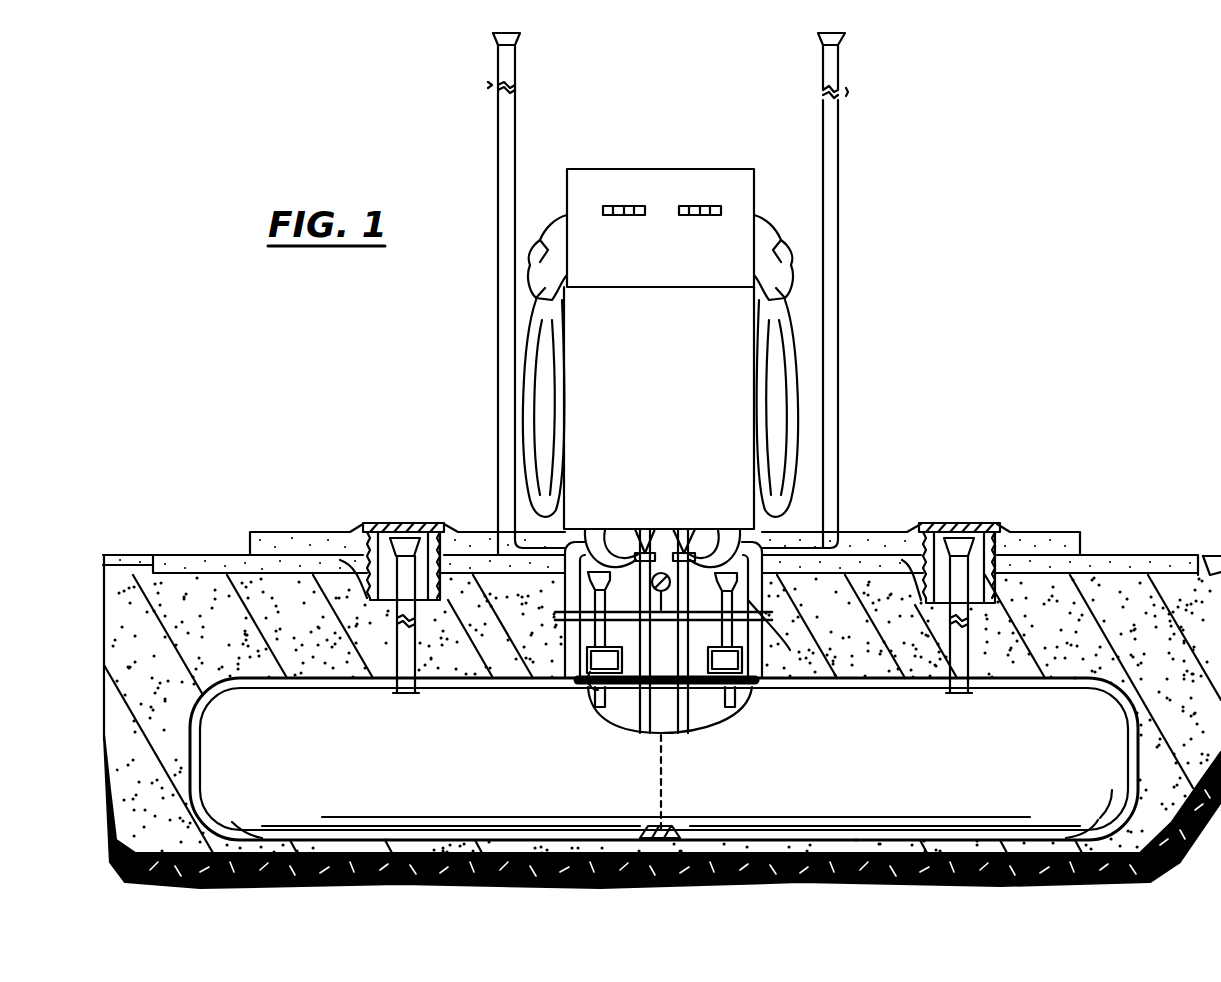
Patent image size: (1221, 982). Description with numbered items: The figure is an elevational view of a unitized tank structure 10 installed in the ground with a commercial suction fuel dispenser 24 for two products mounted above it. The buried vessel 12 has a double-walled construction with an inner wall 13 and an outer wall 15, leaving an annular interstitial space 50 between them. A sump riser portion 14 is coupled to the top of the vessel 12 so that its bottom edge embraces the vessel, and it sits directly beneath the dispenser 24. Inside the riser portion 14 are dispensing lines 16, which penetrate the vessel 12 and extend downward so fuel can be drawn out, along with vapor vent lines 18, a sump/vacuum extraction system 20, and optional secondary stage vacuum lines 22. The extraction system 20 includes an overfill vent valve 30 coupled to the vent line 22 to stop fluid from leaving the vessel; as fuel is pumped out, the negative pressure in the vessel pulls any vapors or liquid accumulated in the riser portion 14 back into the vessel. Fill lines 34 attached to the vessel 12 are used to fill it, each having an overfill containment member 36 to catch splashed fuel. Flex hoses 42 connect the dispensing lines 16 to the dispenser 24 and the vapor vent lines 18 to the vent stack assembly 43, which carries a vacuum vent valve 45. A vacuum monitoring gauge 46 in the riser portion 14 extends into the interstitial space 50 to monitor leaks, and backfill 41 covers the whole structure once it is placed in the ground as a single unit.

The unitized tank structure 10 is at (1135, 512).
The vessel 12 is at (262, 838).
The inner wall 13 is at (632, 725).
The sump riser portion 14 is at (790, 650).
The outer wall 15 is at (602, 716).
The dispensing lines 16 is at (620, 541).
The vapor vent lines 18 is at (580, 662).
The sump/vacuum extraction system 20 is at (572, 670).
The secondary stage vacuum lines 22 is at (576, 592).
The fuel dispenser 24 is at (645, 182).
The overfill vent valve 30 is at (724, 707).
The fill lines 34 is at (367, 598).
The overfill containment members 36 is at (400, 530).
The backfill 41 is at (193, 585).
The flex hoses 42 is at (656, 545).
The vent stack assembly 43 is at (845, 146).
The vacuum vent valve 45 is at (846, 78).
The vacuum monitoring gauge 46 is at (708, 541).
The annular interstitial space 50 is at (638, 830).